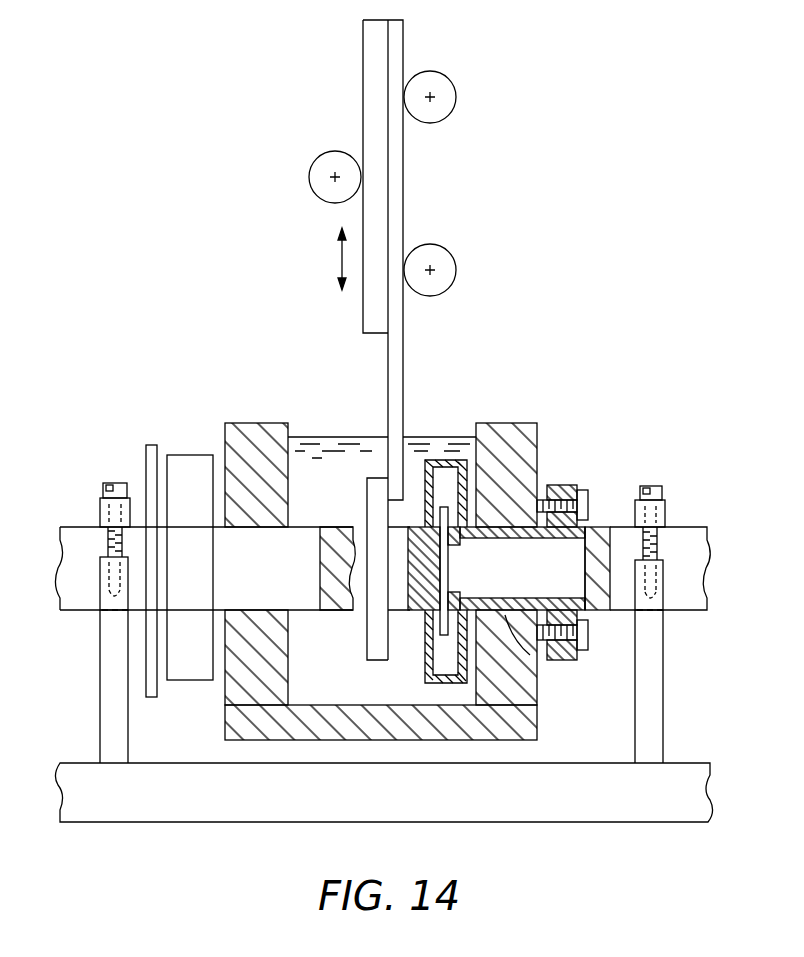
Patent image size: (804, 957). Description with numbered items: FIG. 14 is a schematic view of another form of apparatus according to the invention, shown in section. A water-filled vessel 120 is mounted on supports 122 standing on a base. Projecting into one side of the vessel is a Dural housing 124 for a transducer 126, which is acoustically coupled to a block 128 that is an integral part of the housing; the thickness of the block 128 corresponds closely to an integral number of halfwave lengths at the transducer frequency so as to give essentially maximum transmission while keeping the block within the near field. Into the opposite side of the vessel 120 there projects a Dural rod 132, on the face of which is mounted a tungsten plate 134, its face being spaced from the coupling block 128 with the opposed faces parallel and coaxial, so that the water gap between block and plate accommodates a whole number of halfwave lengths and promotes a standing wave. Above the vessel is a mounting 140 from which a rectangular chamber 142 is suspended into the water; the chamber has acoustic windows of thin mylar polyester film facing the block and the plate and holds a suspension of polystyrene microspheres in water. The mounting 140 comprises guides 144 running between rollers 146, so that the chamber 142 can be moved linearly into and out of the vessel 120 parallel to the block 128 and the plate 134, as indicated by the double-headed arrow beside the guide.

The water-filled vessel 120 is at (530, 442).
The supports 122 is at (103, 722).
The housing 124 is at (510, 620).
The transducer 126 is at (443, 507).
The block 128 is at (415, 625).
The rod 132 is at (305, 538).
The tungsten plate 134 is at (350, 612).
The mounting 140 is at (372, 340).
The rectangular chamber 142 is at (367, 506).
The guides 144 is at (363, 318).
The rollers 146 is at (360, 180).